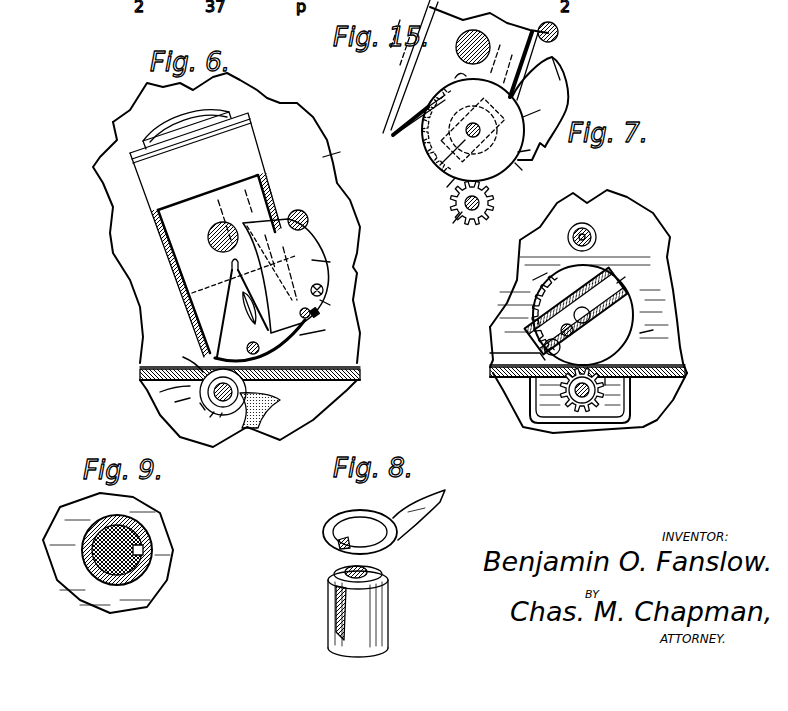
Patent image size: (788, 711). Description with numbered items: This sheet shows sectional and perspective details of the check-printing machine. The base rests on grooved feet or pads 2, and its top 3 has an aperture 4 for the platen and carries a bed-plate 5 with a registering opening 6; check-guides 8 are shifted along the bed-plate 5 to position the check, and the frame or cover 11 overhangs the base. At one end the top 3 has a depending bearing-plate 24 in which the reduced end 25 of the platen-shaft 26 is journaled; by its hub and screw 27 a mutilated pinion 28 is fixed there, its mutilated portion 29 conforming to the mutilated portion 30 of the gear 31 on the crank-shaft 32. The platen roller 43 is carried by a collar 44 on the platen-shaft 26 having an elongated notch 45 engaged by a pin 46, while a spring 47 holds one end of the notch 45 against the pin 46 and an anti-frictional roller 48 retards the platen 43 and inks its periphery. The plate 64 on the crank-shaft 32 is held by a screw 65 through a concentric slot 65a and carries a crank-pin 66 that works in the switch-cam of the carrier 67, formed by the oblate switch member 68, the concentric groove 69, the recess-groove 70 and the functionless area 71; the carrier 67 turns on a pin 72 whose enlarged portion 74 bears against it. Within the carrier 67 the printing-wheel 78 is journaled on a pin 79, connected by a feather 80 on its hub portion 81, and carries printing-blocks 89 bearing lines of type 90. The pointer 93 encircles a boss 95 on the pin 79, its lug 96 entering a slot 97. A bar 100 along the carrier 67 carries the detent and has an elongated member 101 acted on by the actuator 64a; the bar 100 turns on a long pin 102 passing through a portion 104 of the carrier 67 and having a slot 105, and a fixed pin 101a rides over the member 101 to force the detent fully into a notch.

In FIG. 15, the grooved feet or pads 2 is at (568, 6).
In FIG. 6, the top of the base 3 is at (347, 387).
In FIG. 7, the top of the base 3 is at (627, 373).
In FIG. 6, the aperture 4 is at (180, 388).
In FIG. 7, the bed-plate 5 is at (680, 353).
In FIG. 6, the opening 6 is at (185, 357).
In FIG. 6, the check-guides 8 is at (122, 132).
In FIG. 6, the frame or cover 11 is at (344, 154).
In FIG. 7, the frame or cover 11 is at (653, 235).
In FIG. 7, the bearing-plate 24 is at (537, 417).
In FIG. 15, the reduced end of the platen-shaft 25 is at (470, 205).
In FIG. 6, the platen-shaft 26 is at (210, 417).
In FIG. 7, the platen-shaft 26 is at (590, 400).
In FIG. 7, the hub and screw 27 is at (573, 407).
In FIG. 15, the mutilated pinion 28 is at (497, 180).
In FIG. 7, the mutilated pinion 28 is at (553, 380).
In FIG. 15, the mutilated portion of the pinion 29 is at (447, 187).
In FIG. 7, the mutilated portion of the pinion 29 is at (617, 387).
In FIG. 15, the mutilated portion of the gear 30 is at (523, 117).
In FIG. 7, the mutilated portion of the gear 30 is at (653, 330).
In FIG. 15, the mutilated gear 31 is at (420, 137).
In FIG. 7, the mutilated gear 31 is at (533, 280).
In FIG. 15, the crank-shaft 32 is at (448, 160).
In FIG. 7, the crank-shaft 32 is at (583, 313).
In FIG. 6, the platen roller or wheel 43 is at (223, 413).
In FIG. 6, the collar or sleeve 44 is at (247, 393).
In FIG. 6, the elongated notch or opening 45 is at (190, 398).
In FIG. 6, the pin 46 is at (200, 403).
In FIG. 6, the spring 47 is at (220, 417).
In FIG. 6, the anti-frictional roller 48 is at (245, 425).
In FIG. 15, the plate 64 is at (447, 92).
In FIG. 7, the plate 64 is at (653, 300).
In FIG. 15, the actuator 64a is at (532, 206).
In FIG. 7, the actuator 64a is at (617, 283).
In FIG. 7, the screw 65 is at (580, 340).
In FIG. 7, the concentric slot 65a is at (550, 327).
In FIG. 6, the crank-pin 66 is at (277, 353).
In FIG. 15, the crank-pin 66 is at (515, 83).
In FIG. 7, the crank-pin 66 is at (540, 353).
In FIG. 6, the carrier 67 is at (250, 147).
In FIG. 15, the carrier 67 is at (563, 30).
In FIG. 6, the oblate switch member 68 is at (243, 319).
In FIG. 15, the oblate switch member 68 is at (480, 120).
In FIG. 6, the concentric groove 69 is at (266, 308).
In FIG. 15, the concentric groove 69 is at (482, 138).
In FIG. 6, the recess-groove 70 is at (223, 270).
In FIG. 15, the recess-groove 70 is at (460, 70).
In FIG. 6, the functionless area 71 is at (220, 318).
In FIG. 15, the functionless area 71 is at (402, 117).
In FIG. 7, the pin 72 is at (593, 230).
In FIG. 6, the enlarged portion of the pin 74 is at (208, 237).
In FIG. 15, the enlarged portion of the pin 74 is at (478, 38).
In FIG. 7, the enlarged portion of the pin 74 is at (583, 227).
In FIG. 6, the printing-wheel 78 is at (203, 123).
In FIG. 9, the printing-wheel 78 is at (48, 553).
In FIG. 9, the pin 79 is at (105, 565).
In FIG. 8, the pin 79 is at (392, 622).
In FIG. 9, the feather or rib 80 is at (150, 548).
In FIG. 9, the hub portion 81 is at (140, 580).
In FIG. 6, the printing-blocks 89 is at (303, 340).
In FIG. 6, the types or lines of types 90 is at (163, 130).
In FIG. 8, the pointer 93 is at (420, 520).
In FIG. 8, the boss or extension 95 is at (372, 577).
In FIG. 8, the lug or feather 96 is at (328, 553).
In FIG. 8, the groove or slot 97 is at (338, 604).
In FIG. 6, the bar 100 is at (320, 262).
In FIG. 15, the bar 100 is at (518, 152).
In FIG. 6, the elongated member 101 is at (297, 240).
In FIG. 15, the elongated member 101 is at (557, 80).
In FIG. 6, the pin 101a is at (308, 215).
In FIG. 15, the pin 101a is at (548, 32).
In FIG. 6, the long pin 102 is at (327, 303).
In FIG. 15, the long pin 102 is at (515, 163).
In FIG. 6, the portion of the carrier 104 is at (318, 318).
In FIG. 6, the slot 105 is at (323, 290).